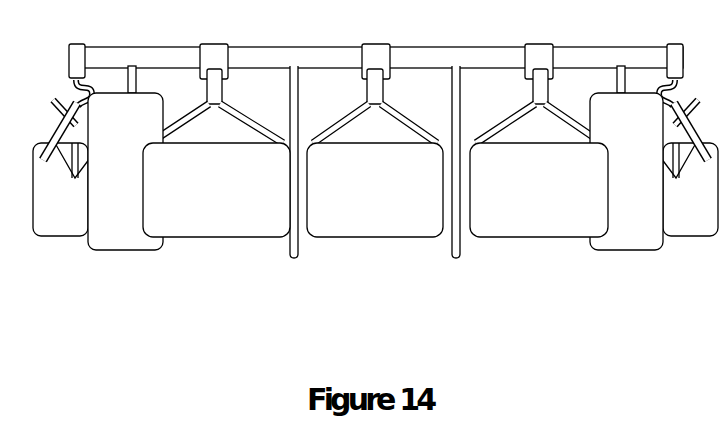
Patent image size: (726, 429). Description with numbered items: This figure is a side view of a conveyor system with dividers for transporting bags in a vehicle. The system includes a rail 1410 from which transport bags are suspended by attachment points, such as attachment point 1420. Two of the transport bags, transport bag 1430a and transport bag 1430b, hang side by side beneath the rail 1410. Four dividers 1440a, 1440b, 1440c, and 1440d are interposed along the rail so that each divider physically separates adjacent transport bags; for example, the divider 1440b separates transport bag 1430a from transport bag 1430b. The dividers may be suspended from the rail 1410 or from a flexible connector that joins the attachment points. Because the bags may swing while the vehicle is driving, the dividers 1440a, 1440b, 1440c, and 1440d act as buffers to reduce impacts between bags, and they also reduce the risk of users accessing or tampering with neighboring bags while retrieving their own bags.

The rail 1410 is at (272, 48).
The attachment point 1420 is at (376, 55).
The transport bag 1430a is at (216, 190).
The transport bag 1430b is at (375, 190).
The divider 1440a is at (127, 253).
The divider 1440b is at (293, 260).
The divider 1440c is at (455, 260).
The divider 1440d is at (614, 253).